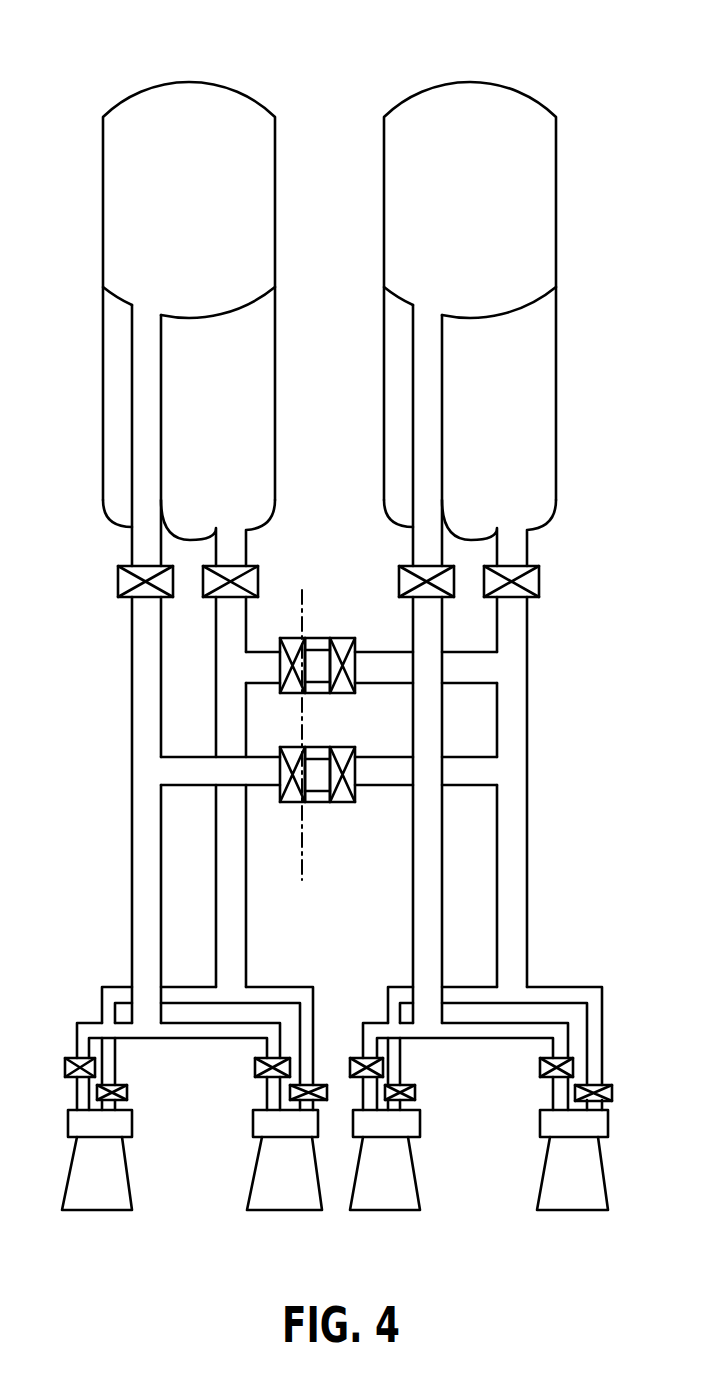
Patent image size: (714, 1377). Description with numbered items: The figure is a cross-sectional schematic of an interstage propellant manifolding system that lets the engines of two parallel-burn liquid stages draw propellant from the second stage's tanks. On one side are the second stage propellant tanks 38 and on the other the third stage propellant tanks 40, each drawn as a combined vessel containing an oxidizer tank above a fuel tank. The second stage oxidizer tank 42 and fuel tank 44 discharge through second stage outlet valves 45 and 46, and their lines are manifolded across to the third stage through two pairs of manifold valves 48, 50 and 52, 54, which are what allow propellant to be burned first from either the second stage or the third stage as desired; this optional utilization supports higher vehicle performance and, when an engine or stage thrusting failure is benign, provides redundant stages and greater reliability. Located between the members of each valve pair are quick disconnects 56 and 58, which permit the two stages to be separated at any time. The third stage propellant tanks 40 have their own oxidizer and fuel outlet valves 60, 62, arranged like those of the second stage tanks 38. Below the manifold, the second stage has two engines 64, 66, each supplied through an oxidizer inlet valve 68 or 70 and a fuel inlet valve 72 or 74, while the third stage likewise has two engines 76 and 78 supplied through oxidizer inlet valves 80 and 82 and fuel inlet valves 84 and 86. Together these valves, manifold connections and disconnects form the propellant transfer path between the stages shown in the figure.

The second stage propellant tanks 38 is at (190, 74).
The third stage propellant tanks 40 is at (474, 74).
The oxidizer tank 42 is at (103, 190).
The fuel tank 44 is at (103, 370).
The second stage outlet valve 45 is at (118, 578).
The second stage outlet valve 46 is at (258, 578).
The manifold valve 48 is at (280, 642).
The manifold valve 50 is at (343, 640).
The manifold valve 52 is at (280, 750).
The manifold valve 54 is at (343, 748).
The quick disconnect 56 is at (318, 638).
The quick disconnect 58 is at (326, 747).
The oxidizer outlet valve 60 is at (399, 578).
The fuel outlet valve 62 is at (539, 580).
The engine 64 is at (82, 1212).
The engine 66 is at (265, 1212).
The oxidizer inlet valve 68 is at (65, 1067).
The oxidizer inlet valve 70 is at (255, 1067).
The fuel inlet valve 72 is at (127, 1093).
The fuel inlet valve 74 is at (327, 1093).
The engine 76 is at (365, 1212).
The engine 78 is at (595, 1212).
The oxidizer inlet valve 80 is at (352, 1062).
The oxidizer inlet valve 82 is at (543, 1074).
The fuel inlet valve 84 is at (415, 1093).
The fuel inlet valve 86 is at (612, 1095).